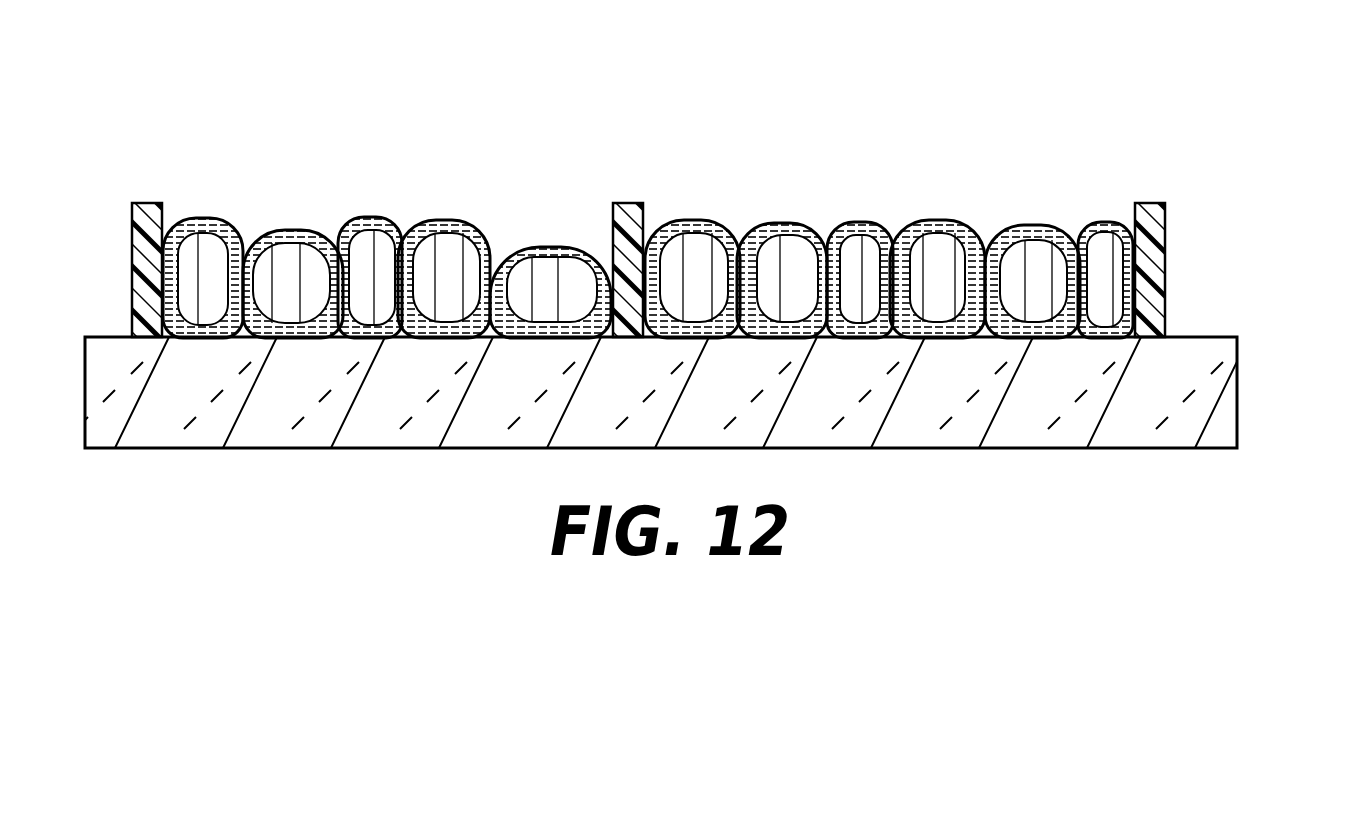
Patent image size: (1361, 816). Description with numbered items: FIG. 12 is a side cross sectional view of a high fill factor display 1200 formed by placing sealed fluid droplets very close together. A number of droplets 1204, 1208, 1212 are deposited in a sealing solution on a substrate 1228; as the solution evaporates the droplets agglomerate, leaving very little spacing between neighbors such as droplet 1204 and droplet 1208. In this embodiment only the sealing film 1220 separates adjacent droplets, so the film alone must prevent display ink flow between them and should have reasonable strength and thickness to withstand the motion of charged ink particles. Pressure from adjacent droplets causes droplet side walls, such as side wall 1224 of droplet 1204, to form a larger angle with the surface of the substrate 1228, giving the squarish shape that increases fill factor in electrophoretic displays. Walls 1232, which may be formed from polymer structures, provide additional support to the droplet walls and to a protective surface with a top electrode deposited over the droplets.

The high fill factor display 1200 is at (198, 140).
The droplet 1204 is at (654, 231).
The droplet 1208 is at (785, 270).
The droplet 1212 is at (867, 257).
The sealing film 1220 is at (859, 223).
The side wall 1224 is at (726, 268).
The substrate 1228 is at (1225, 377).
The walls 1232 is at (612, 228).